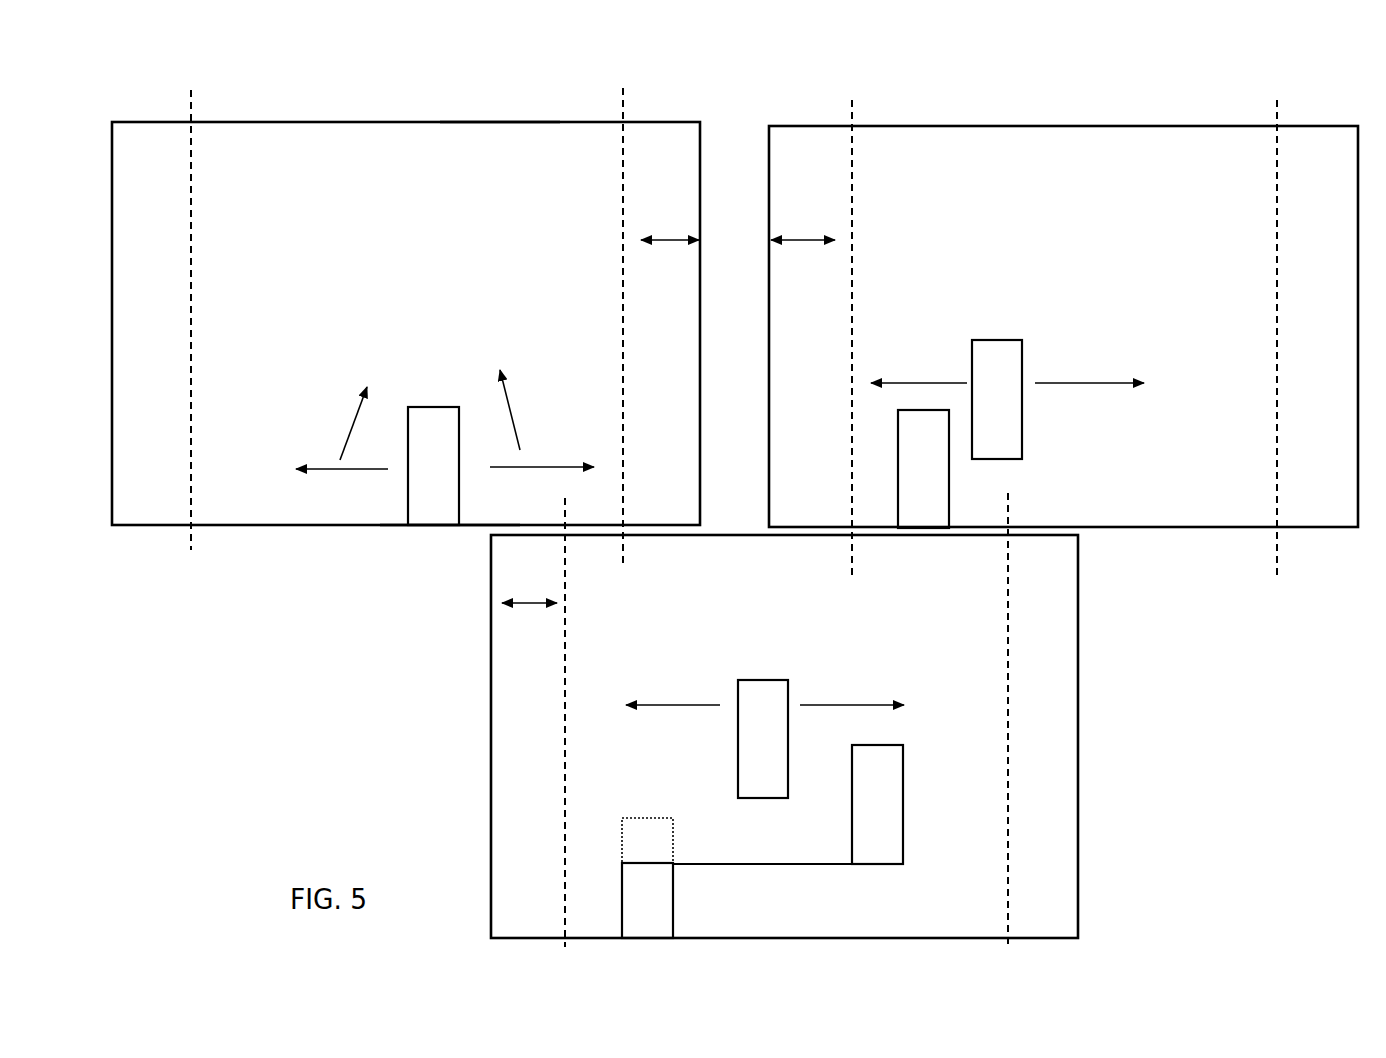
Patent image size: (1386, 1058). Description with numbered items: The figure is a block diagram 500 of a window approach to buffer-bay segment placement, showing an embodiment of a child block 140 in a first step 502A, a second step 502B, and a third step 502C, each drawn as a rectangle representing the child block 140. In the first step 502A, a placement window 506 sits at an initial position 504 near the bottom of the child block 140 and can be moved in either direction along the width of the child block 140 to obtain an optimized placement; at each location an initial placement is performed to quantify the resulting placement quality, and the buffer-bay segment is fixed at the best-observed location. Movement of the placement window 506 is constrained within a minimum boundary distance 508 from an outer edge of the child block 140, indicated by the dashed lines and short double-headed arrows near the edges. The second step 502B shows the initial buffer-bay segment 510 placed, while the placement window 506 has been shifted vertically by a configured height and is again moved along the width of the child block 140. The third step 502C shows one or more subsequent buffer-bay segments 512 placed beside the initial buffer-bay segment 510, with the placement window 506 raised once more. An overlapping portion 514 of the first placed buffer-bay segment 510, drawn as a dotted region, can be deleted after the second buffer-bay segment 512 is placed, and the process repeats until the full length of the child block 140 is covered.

The block diagram 500 is at (218, 80).
The first step 502A is at (290, 122).
The second step 502B is at (920, 126).
The third step 502C is at (1079, 791).
The child block 140 is at (490, 128).
The initial position 504 is at (440, 523).
The placement window 506 is at (413, 518).
The minimum boundary distance 508 is at (670, 222).
The initial buffer-bay segment 510 is at (928, 517).
The subsequent buffer-bay segment 512 is at (903, 787).
The overlapping portion 514 is at (642, 835).